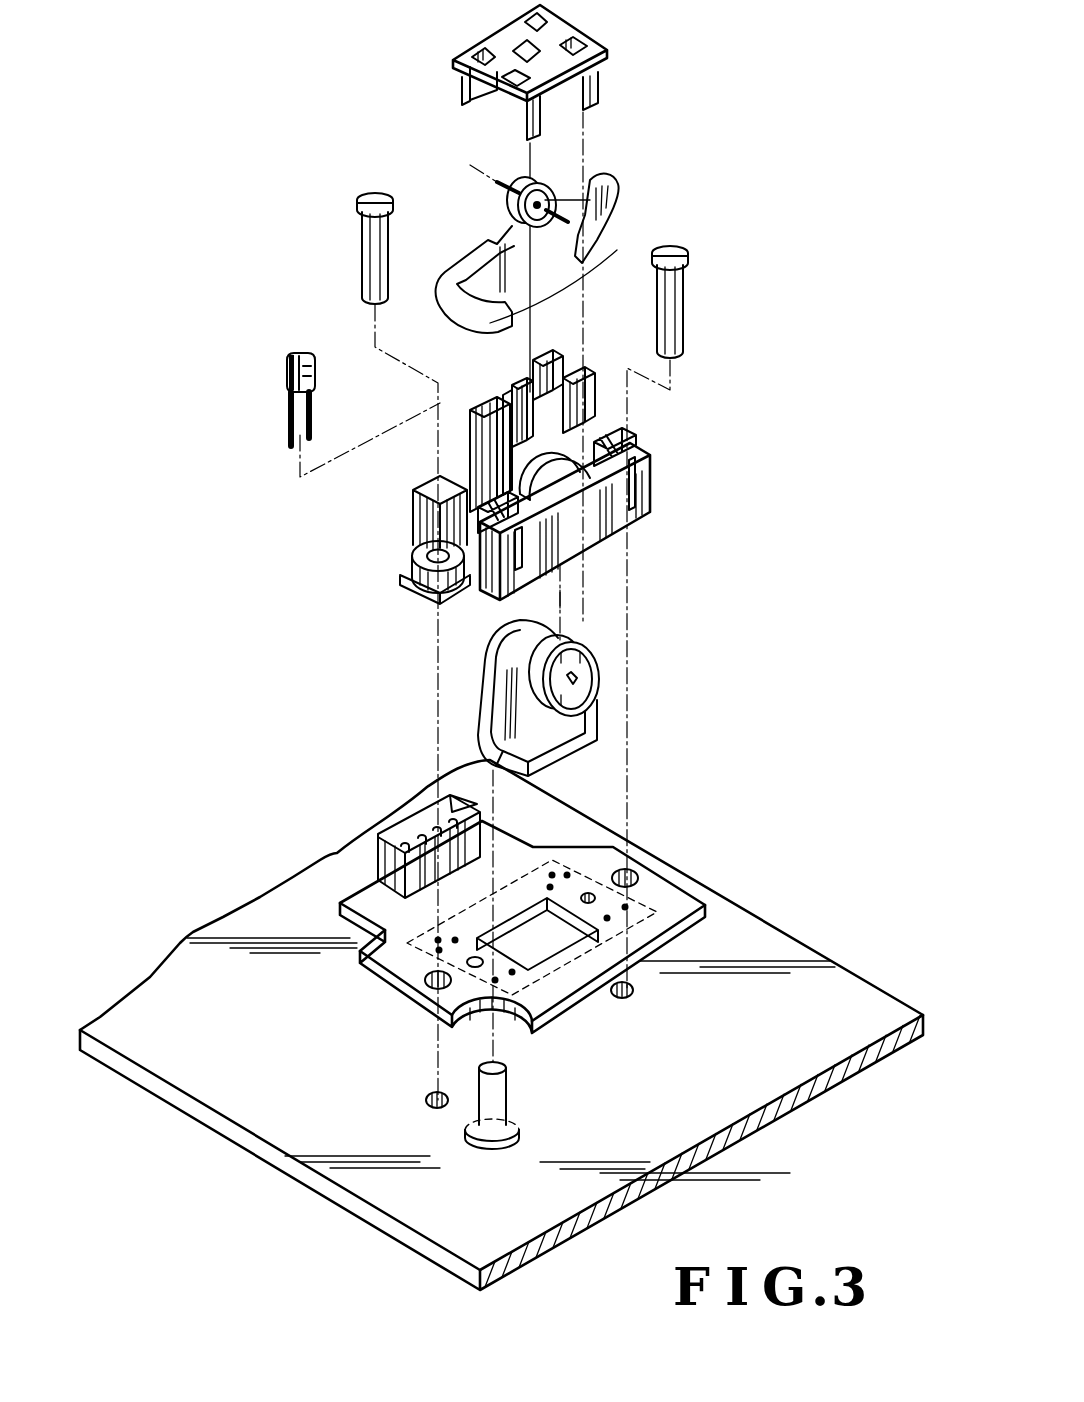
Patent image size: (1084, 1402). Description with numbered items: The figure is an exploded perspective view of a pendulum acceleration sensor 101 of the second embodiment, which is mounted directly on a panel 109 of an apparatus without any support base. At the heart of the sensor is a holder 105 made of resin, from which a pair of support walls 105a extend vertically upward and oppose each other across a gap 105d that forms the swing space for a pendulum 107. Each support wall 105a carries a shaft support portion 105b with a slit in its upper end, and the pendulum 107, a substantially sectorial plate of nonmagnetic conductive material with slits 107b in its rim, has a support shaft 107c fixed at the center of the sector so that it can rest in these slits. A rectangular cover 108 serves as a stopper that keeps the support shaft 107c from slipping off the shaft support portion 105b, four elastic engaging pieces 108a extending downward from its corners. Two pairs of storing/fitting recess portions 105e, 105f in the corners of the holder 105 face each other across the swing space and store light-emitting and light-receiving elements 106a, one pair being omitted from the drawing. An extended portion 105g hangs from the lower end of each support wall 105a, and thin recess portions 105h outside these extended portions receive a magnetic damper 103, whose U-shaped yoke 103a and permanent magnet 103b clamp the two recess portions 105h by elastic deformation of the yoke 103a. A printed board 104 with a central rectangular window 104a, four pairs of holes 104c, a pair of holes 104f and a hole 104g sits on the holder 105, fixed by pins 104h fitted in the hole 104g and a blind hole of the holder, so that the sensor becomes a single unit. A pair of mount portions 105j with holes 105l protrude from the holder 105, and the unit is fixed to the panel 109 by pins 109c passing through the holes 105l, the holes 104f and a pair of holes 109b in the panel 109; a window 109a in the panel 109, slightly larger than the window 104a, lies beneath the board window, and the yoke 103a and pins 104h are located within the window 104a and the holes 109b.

The pendulum acceleration sensor 101 is at (582, 515).
The magnetic damper 103 is at (565, 697).
The yoke 103a is at (513, 658).
The permanent magnet 103b is at (572, 620).
The printed board 104 is at (501, 990).
The rectangular window 104a is at (560, 943).
The holes 104c is at (551, 884).
The holes 104f is at (640, 880).
The hole 104g is at (392, 927).
The pins 104h is at (502, 1142).
The holder 105 is at (549, 516).
The support walls 105a is at (513, 432).
The shaft support portion 105b is at (510, 380).
The gap 105d is at (487, 428).
The storing/fitting recess portions 105e is at (407, 587).
The storing/fitting recess portions 105f is at (550, 520).
The extended portion 105g is at (583, 497).
The thin recess portions 105h is at (655, 490).
The mount portions 105j is at (425, 568).
The holes 105l is at (432, 598).
The light-emitting and light-receiving elements 106a is at (285, 368).
The pendulum 107 is at (555, 240).
The slits 107b is at (610, 215).
The support shaft 107c is at (497, 182).
The rectangular cover 108 is at (582, 72).
The elastic engaging pieces 108a is at (545, 125).
The panel 109 is at (501, 1025).
The window 109a is at (540, 1058).
The holes 109b is at (637, 992).
The pins 109c is at (362, 240).